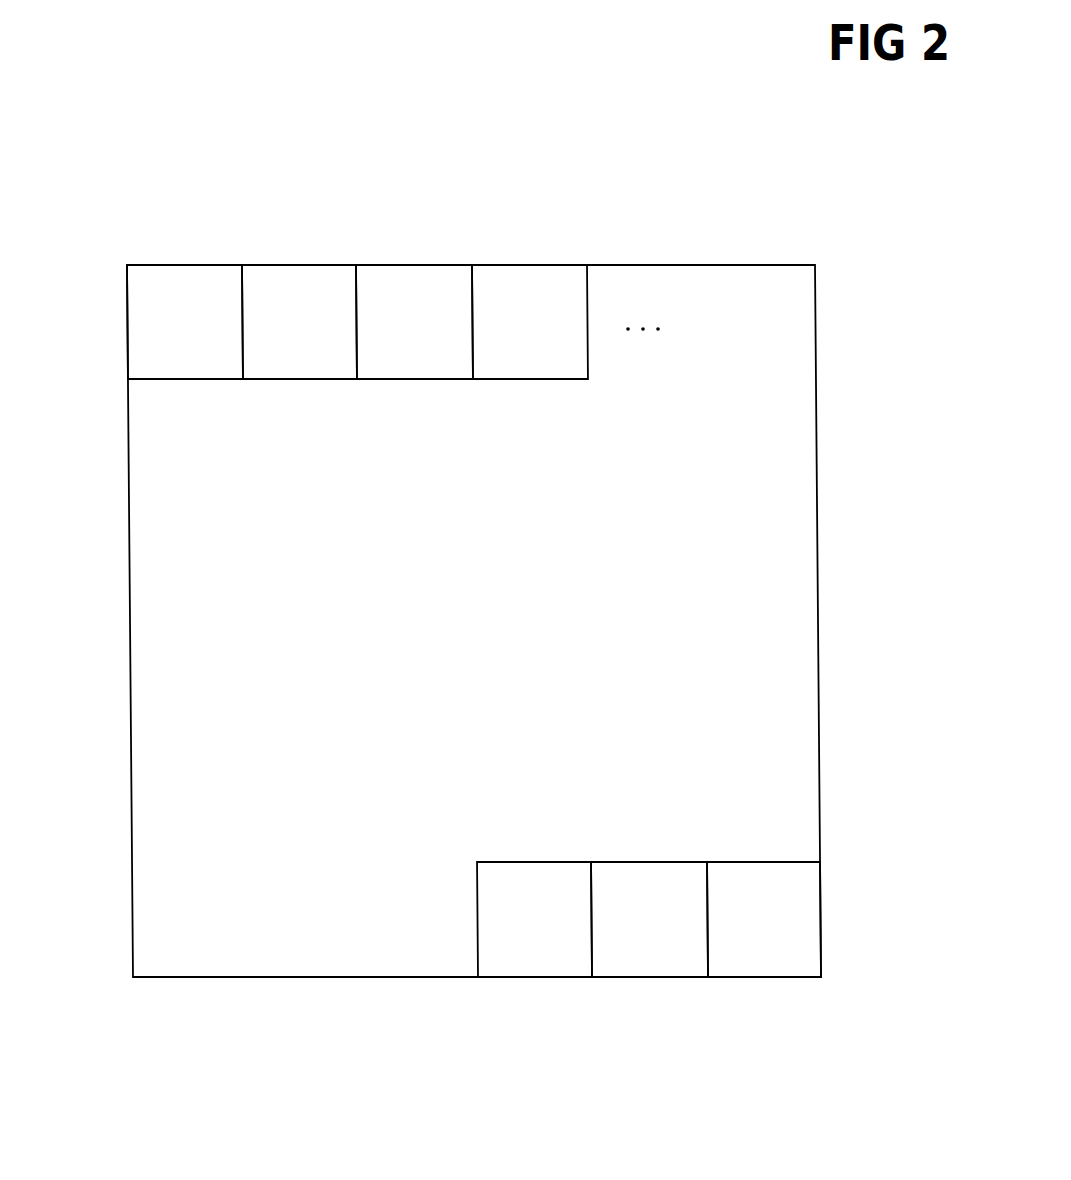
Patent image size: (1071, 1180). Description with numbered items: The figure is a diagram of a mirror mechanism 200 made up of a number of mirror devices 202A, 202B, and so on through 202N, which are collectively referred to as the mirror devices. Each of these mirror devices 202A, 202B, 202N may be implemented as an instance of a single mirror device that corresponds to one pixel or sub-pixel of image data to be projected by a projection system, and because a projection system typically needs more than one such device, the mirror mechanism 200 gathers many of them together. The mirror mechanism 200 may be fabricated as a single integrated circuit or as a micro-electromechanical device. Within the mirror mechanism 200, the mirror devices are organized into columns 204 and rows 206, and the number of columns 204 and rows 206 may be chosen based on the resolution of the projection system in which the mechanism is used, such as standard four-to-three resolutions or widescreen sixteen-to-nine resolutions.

The mirror mechanism 200 is at (136, 178).
The mirror device 202A is at (155, 334).
The mirror device 202B is at (270, 334).
The mirror device 202N is at (733, 934).
The columns 204 is at (133, 995).
The rows 206 is at (833, 266).